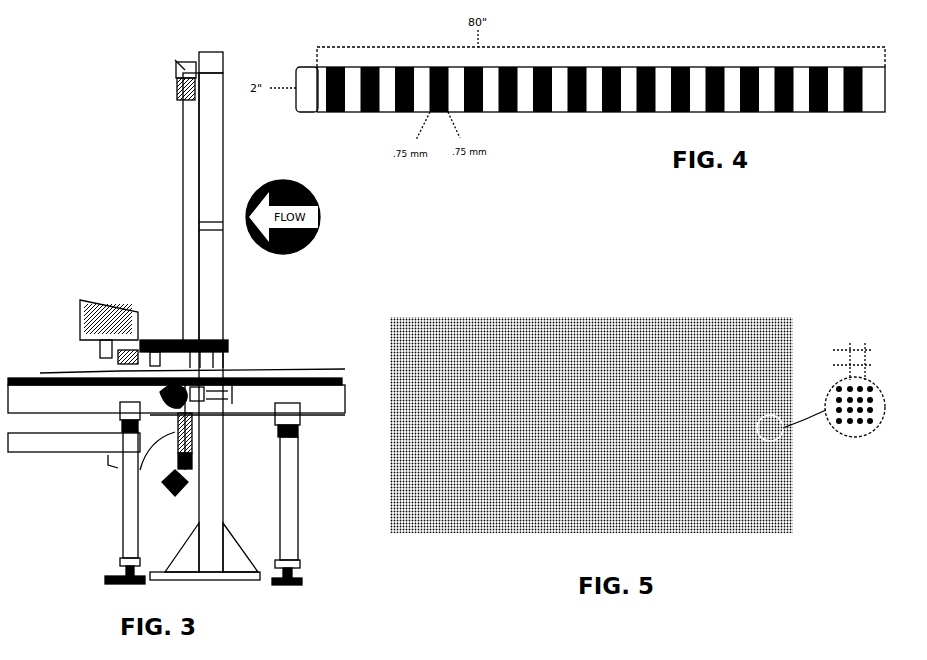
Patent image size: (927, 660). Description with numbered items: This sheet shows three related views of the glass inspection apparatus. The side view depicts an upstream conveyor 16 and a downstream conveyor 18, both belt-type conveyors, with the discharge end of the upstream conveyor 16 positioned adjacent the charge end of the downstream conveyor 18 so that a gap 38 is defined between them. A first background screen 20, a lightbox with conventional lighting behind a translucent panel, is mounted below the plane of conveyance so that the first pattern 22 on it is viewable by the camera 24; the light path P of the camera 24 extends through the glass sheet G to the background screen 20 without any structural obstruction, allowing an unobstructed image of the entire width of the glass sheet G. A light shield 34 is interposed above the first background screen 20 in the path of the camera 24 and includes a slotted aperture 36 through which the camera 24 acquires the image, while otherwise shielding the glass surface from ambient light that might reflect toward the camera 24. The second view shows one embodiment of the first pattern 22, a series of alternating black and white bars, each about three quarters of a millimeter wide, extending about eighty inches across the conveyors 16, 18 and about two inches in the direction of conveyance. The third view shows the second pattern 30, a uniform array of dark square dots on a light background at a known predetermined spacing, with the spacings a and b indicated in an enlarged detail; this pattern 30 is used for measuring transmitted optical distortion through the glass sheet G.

In FIG. 3, the upstream conveyor 16 is at (330, 378).
In FIG. 3, the downstream conveyor 18 is at (24, 378).
In FIG. 3, the first background screen 20 is at (140, 470).
In FIG. 4, the first pattern 22 is at (600, 112).
In FIG. 3, the camera 24 is at (178, 92).
In FIG. 5, the second pattern 30 is at (598, 317).
In FIG. 3, the light shield 34 is at (144, 340).
In FIG. 3, the slotted aperture 36 is at (184, 340).
In FIG. 3, the gap 38 is at (200, 440).
In FIG. 3, the light path P is at (183, 180).
In FIG. 3, the glass sheet G is at (262, 369).
In FIG. 5, the dot spacing a is at (873, 365).
In FIG. 5, the dot spacing b is at (873, 350).